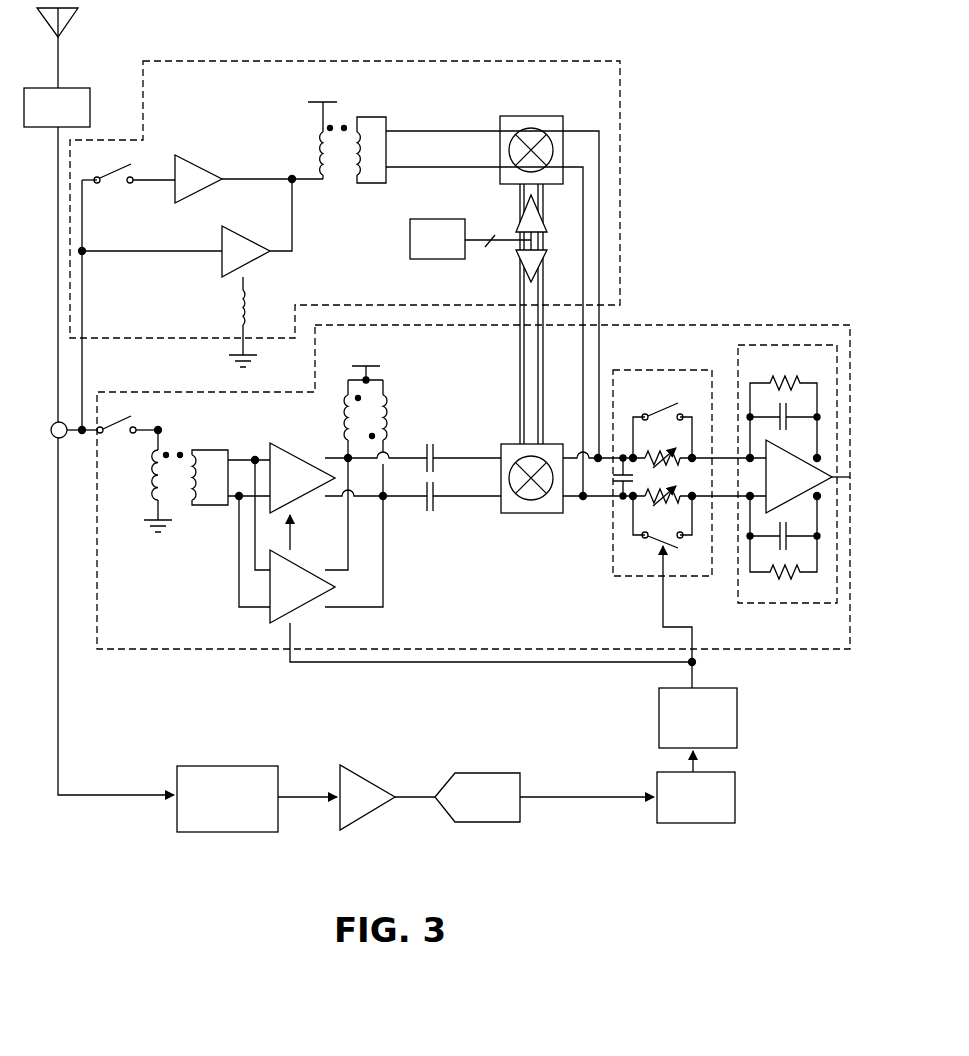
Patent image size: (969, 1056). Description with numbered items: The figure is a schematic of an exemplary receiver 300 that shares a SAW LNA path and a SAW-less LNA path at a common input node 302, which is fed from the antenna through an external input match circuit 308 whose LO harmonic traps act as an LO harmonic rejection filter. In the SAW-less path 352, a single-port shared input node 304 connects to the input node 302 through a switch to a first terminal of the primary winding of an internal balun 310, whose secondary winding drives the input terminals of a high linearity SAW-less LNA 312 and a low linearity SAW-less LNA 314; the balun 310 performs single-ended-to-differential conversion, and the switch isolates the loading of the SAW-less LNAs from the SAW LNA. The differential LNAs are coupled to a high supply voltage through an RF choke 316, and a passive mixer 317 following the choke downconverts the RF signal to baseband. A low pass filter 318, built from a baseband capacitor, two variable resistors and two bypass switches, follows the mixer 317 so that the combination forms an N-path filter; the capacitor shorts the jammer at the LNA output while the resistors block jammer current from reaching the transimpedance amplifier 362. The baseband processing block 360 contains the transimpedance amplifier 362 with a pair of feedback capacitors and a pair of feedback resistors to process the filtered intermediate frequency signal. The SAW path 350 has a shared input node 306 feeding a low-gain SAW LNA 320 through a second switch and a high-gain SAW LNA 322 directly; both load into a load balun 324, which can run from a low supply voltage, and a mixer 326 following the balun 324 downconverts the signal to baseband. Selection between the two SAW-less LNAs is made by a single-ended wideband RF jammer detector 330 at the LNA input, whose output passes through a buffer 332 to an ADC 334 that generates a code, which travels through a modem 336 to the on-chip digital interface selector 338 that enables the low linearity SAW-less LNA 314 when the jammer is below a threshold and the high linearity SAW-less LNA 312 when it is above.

The receiver 300 is at (433, 420).
The input node 302 is at (41, 426).
The shared input node 304 is at (158, 430).
The shared input node 306 is at (82, 251).
The input match circuit 308 is at (57, 107).
The internal balun 310 is at (184, 481).
The high linearity SAW-less LNA 312 is at (291, 464).
The low linearity SAW-less LNA 314 is at (302, 574).
The RF choke 316 is at (387, 420).
The mixer 317 is at (532, 493).
The low pass filter 318 is at (663, 370).
The low-gain SAW LNA 320 is at (201, 169).
The high-gain SAW LNA 322 is at (187, 273).
The load balun 324 is at (342, 147).
The mixer 326 is at (531, 138).
The jammer detector 330 is at (227, 786).
The buffer 332 is at (367, 785).
The ADC 334 is at (477, 781).
The modem 336 is at (719, 797).
The digital interface selector 338 is at (718, 717).
The SAW path 350 is at (203, 61).
The SAW-less path 352 is at (711, 325).
The baseband processing block 360 is at (762, 603).
The transimpedance amplifier 362 is at (808, 476).